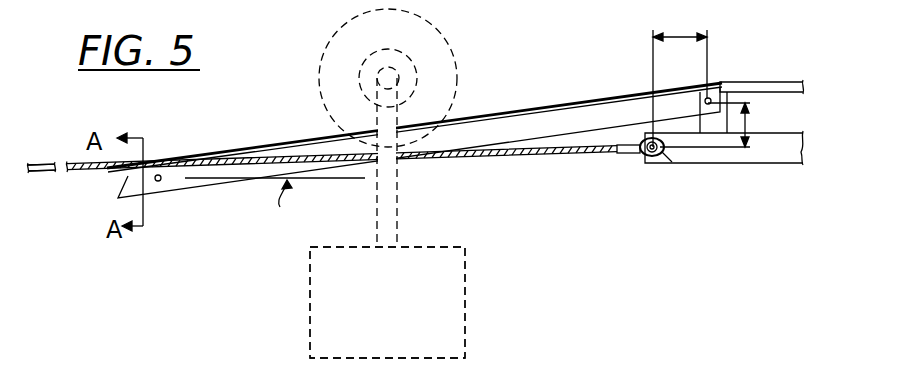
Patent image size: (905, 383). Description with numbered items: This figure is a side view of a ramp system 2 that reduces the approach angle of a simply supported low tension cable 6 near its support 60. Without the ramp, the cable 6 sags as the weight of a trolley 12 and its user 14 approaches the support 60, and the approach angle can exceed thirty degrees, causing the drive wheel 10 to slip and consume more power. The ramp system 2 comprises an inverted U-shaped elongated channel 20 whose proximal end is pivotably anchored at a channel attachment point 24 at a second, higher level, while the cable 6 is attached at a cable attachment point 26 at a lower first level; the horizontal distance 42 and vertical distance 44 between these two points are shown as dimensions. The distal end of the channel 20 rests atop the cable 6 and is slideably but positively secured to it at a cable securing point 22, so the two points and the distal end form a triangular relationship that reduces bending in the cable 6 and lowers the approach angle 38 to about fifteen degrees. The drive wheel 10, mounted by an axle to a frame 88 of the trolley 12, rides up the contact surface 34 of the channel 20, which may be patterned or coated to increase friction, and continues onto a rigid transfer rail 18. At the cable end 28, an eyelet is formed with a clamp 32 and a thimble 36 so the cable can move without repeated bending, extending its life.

The ramp system 2 is at (414, 111).
The low tension cable 6 is at (85, 180).
The drive wheel 10 is at (428, 19).
The trolley 12 is at (467, 295).
The user 14 is at (431, 302).
The transfer rail 18 is at (762, 82).
The channel 20 is at (546, 139).
The cable securing point 22 is at (161, 180).
The channel attachment point 24 is at (706, 98).
The cable attachment point 26 is at (646, 154).
The cable end 28 is at (663, 157).
The clamp 32 is at (622, 156).
The contact surface 34 is at (200, 153).
The thimble 36 is at (655, 125).
The approach angle 38 is at (283, 131).
The horizontal distance 42 is at (680, 37).
The vertical distance 44 is at (748, 123).
The support 60 is at (768, 163).
The frame 88 is at (397, 188).